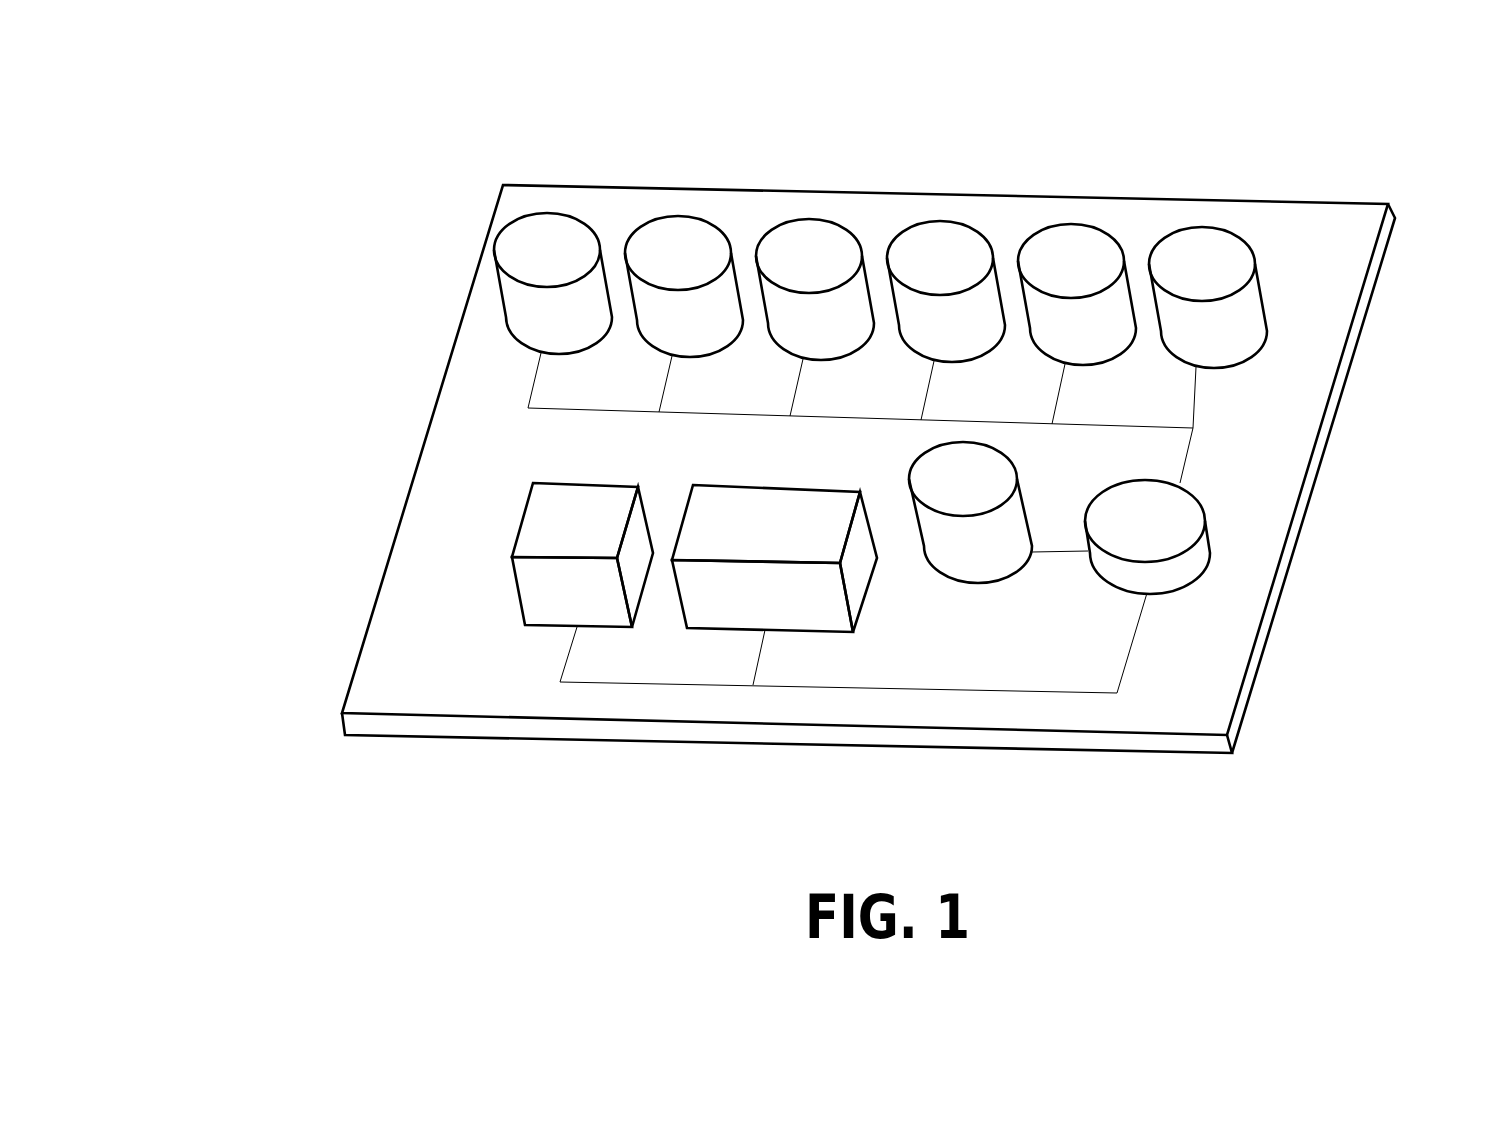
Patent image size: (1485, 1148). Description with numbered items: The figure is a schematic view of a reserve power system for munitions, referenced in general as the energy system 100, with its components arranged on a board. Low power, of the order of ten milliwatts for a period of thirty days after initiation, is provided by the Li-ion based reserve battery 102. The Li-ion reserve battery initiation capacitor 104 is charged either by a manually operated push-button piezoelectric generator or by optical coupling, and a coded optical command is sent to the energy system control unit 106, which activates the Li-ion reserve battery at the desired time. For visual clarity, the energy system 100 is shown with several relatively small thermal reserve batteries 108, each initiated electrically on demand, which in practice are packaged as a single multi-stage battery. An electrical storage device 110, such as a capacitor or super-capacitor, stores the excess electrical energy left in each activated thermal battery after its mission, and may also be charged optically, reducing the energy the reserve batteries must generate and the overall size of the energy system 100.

The energy system 100 is at (262, 173).
The Li-ion based reserve battery 102 is at (723, 642).
The Li-ion reserve battery initiation capacitor 104 is at (1028, 582).
The energy system control unit 106 is at (1230, 552).
The thermal reserve batteries 108 is at (1178, 222).
The electrical storage device 110 is at (502, 543).